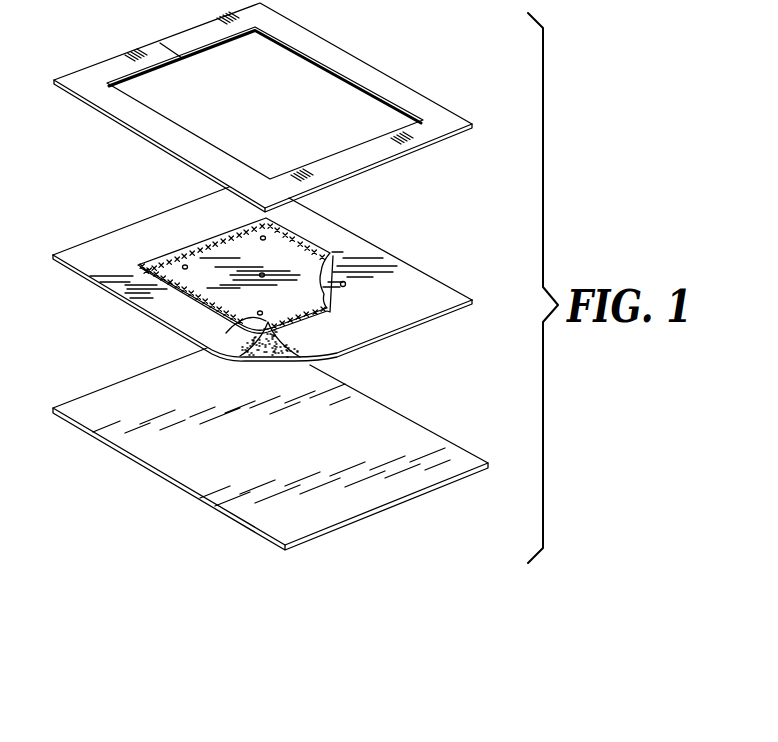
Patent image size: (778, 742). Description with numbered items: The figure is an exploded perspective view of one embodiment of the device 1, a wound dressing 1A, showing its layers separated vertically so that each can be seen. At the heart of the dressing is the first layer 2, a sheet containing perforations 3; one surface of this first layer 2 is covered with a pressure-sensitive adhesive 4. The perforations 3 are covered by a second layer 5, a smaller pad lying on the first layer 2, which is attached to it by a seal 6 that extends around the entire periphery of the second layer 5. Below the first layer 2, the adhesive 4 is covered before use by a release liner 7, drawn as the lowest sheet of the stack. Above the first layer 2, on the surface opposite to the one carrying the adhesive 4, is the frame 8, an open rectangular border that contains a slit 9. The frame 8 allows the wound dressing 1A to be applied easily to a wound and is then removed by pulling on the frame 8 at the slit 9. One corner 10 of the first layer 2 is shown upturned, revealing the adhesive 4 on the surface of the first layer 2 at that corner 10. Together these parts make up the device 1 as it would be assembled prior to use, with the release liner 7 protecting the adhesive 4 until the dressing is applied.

The device 1 is at (72, 446).
The wound dressing 1A is at (100, 293).
The first layer 2 is at (112, 243).
The perforations 3 is at (347, 282).
The pressure-sensitive adhesive 4 is at (266, 352).
The second layer 5 is at (303, 263).
The seal 6 is at (172, 268).
The release liner 7 is at (248, 512).
The frame 8 is at (373, 73).
The slit 9 is at (168, 42).
The corner 10 is at (230, 328).